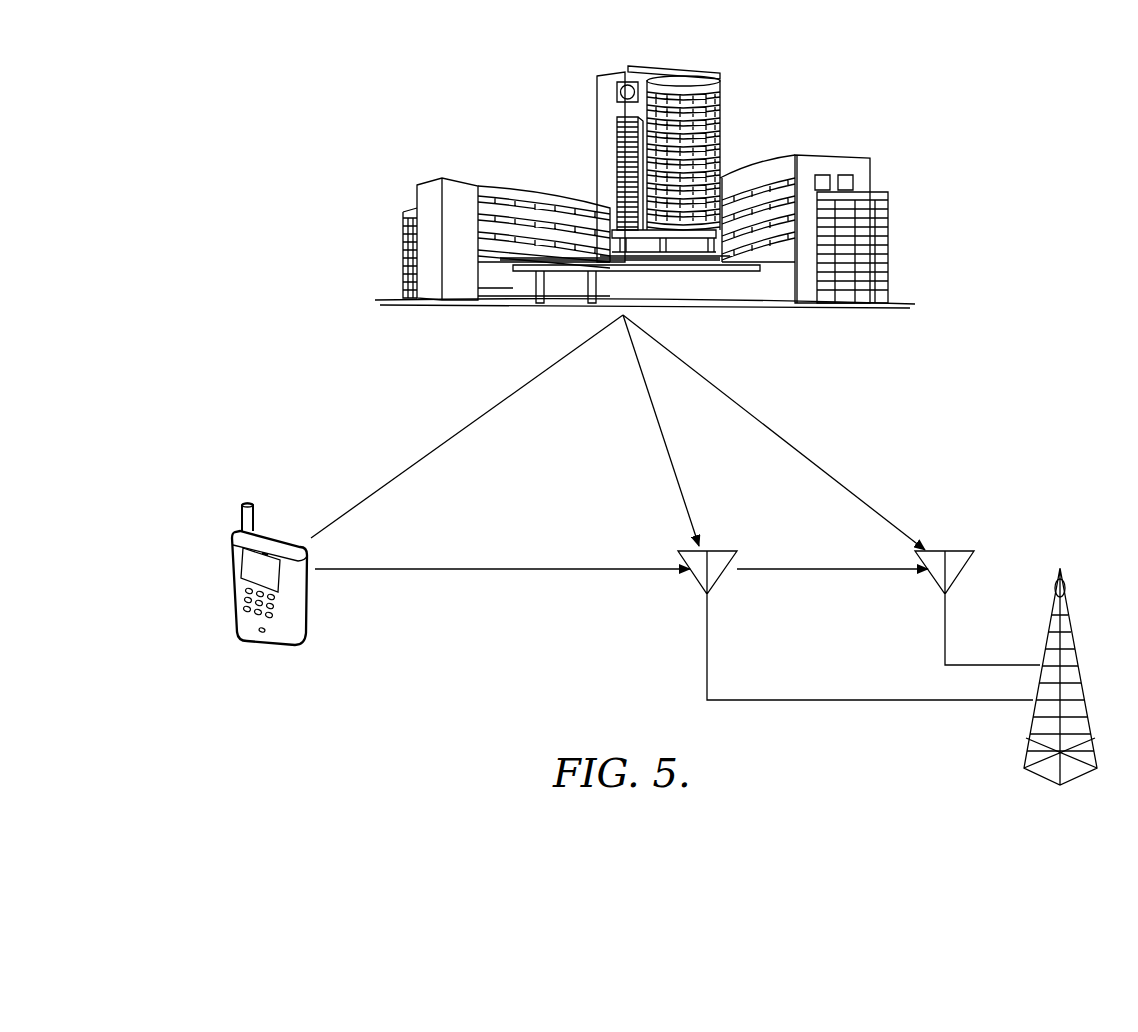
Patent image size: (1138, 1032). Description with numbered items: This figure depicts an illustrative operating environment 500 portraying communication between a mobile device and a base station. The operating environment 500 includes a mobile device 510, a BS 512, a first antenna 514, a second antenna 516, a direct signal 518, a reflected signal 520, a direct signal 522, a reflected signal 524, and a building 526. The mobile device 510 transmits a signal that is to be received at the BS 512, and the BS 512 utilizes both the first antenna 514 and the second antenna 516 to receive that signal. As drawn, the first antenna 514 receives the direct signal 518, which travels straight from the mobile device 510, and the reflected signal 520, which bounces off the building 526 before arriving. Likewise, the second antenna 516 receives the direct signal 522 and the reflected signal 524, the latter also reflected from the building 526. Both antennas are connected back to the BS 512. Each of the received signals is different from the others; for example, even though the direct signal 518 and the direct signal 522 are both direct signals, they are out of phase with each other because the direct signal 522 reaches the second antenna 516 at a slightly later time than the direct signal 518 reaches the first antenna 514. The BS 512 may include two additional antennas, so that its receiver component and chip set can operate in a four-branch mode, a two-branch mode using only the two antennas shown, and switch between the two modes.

The operating environment 500 is at (205, 132).
The mobile device 510 is at (240, 514).
The base station 512 is at (1097, 642).
The first antenna 514 is at (722, 576).
The second antenna 516 is at (960, 576).
The direct signal 518 is at (492, 568).
The reflected signal 520 is at (643, 380).
The direct signal 522 is at (816, 568).
The reflected signal 524 is at (717, 385).
The building 526 is at (597, 89).